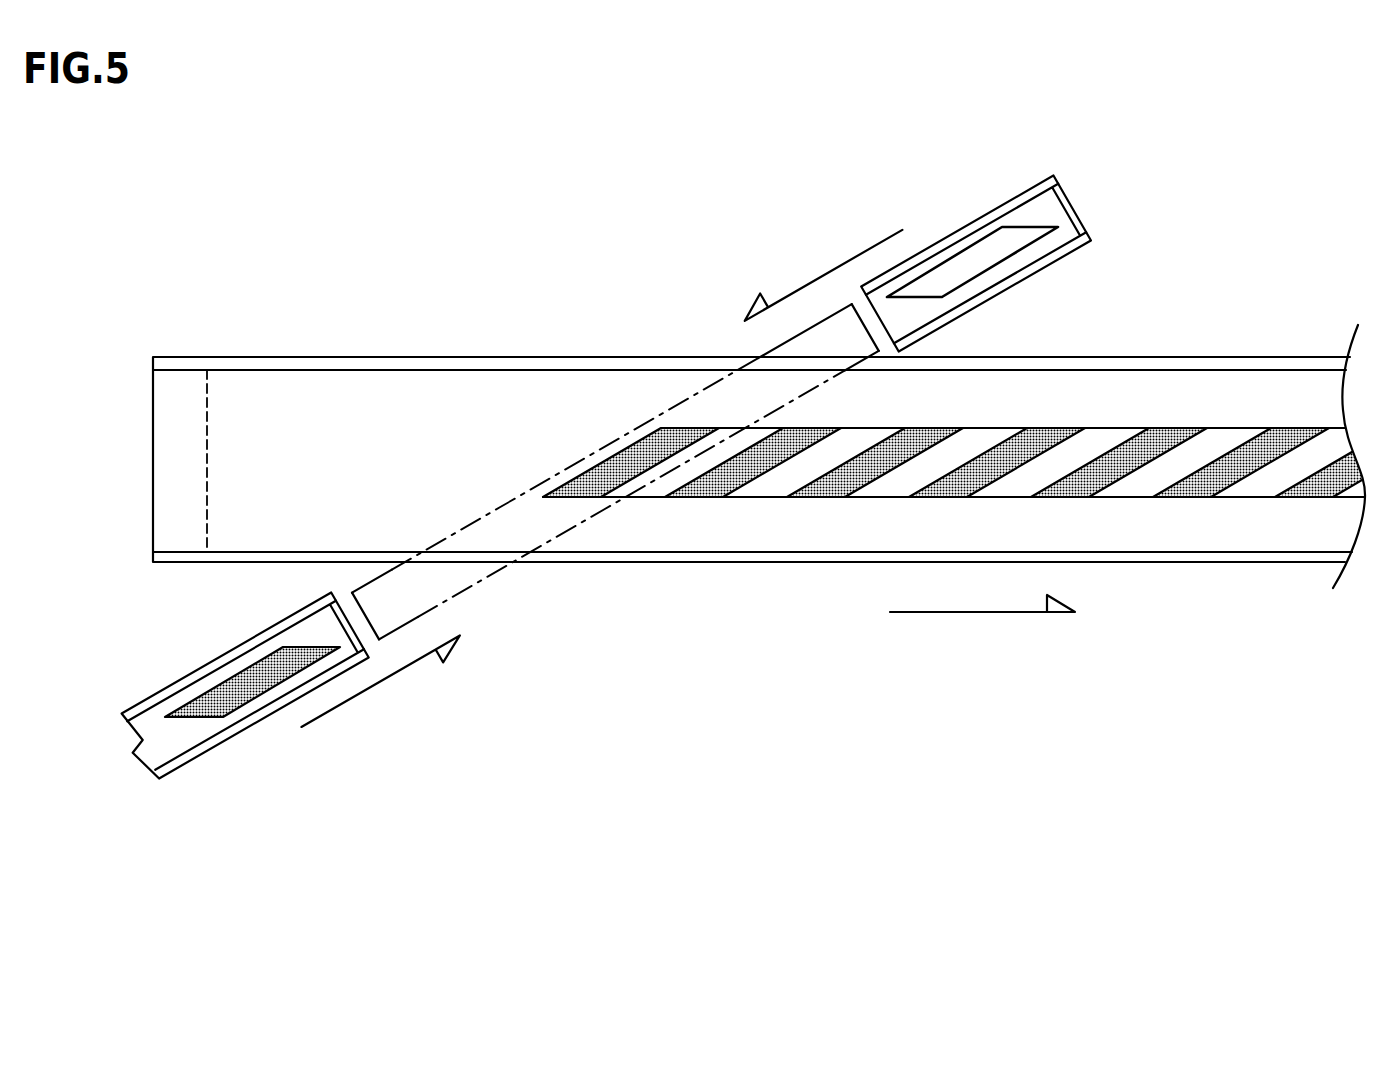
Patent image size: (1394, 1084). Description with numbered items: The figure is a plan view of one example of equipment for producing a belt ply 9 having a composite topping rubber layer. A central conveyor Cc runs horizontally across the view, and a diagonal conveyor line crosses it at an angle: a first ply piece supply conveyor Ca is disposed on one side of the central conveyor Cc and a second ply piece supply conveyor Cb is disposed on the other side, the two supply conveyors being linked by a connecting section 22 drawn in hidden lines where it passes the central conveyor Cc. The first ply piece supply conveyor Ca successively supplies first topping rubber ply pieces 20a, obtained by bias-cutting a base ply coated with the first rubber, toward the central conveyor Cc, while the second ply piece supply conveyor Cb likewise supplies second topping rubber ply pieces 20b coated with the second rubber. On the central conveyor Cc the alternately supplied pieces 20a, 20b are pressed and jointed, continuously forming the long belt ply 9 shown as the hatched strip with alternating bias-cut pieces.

The first ply piece supply conveyor Ca is at (976, 264).
The second ply piece supply conveyor Cb is at (241, 688).
The central conveyor Cc is at (257, 338).
The connecting conveyor section 22 is at (615, 471).
The first topping rubber ply piece 20a is at (978, 257).
The second topping rubber ply piece 20b is at (243, 692).
The belt ply 9 is at (1212, 528).